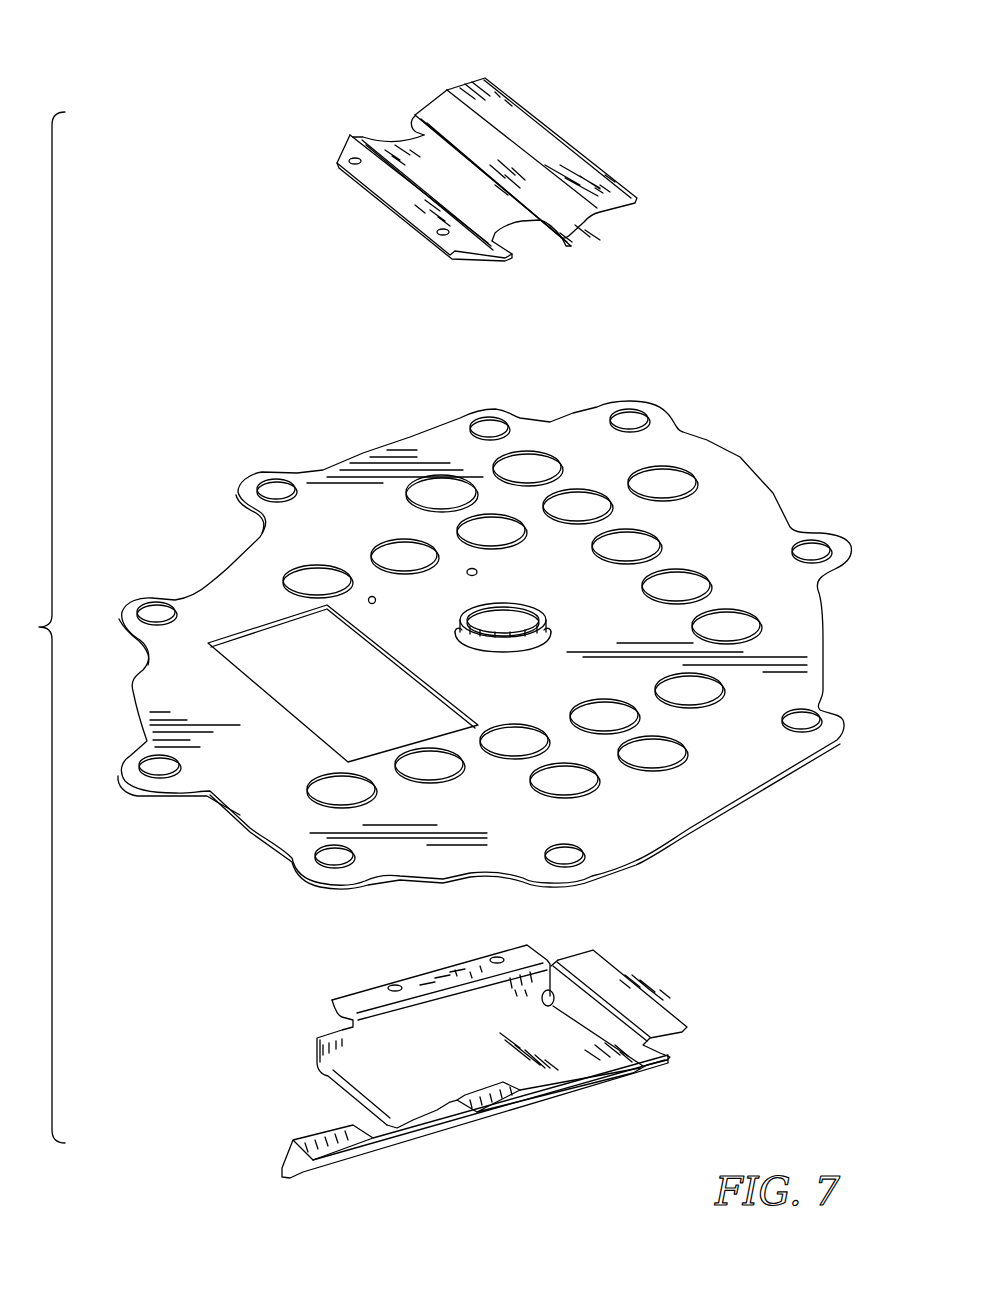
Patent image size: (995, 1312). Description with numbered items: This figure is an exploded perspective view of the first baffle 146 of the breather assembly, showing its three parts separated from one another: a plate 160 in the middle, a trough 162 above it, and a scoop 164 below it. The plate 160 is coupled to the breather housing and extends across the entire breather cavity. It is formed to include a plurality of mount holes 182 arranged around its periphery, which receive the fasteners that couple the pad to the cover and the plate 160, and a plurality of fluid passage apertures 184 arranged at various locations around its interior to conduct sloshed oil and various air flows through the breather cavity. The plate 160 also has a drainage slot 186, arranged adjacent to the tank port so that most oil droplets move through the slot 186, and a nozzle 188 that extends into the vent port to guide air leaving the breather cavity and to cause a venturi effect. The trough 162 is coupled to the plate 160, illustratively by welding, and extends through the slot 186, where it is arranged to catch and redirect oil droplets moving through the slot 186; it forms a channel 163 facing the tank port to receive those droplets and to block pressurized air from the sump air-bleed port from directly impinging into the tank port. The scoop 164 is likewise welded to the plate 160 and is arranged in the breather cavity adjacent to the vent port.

The first baffle 146 is at (765, 163).
The plate 160 is at (733, 447).
The trough 162 is at (551, 122).
The channel 163 is at (441, 108).
The scoop 164 is at (672, 968).
The mount holes 182 is at (497, 428).
The fluid passage apertures 184 is at (440, 492).
The drainage slot 186 is at (305, 690).
The nozzle 188 is at (553, 612).